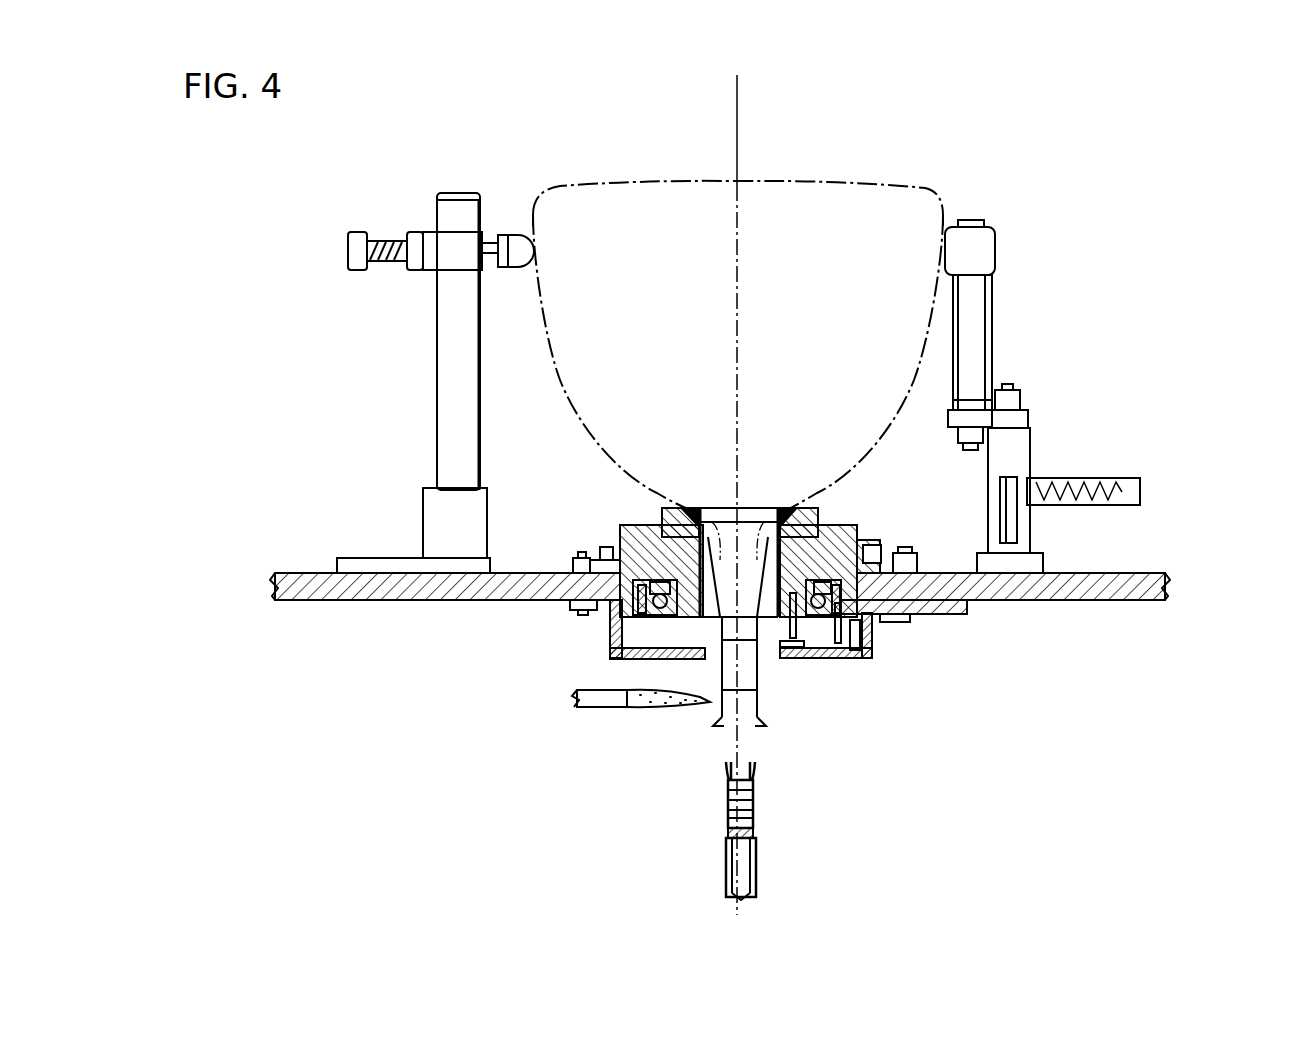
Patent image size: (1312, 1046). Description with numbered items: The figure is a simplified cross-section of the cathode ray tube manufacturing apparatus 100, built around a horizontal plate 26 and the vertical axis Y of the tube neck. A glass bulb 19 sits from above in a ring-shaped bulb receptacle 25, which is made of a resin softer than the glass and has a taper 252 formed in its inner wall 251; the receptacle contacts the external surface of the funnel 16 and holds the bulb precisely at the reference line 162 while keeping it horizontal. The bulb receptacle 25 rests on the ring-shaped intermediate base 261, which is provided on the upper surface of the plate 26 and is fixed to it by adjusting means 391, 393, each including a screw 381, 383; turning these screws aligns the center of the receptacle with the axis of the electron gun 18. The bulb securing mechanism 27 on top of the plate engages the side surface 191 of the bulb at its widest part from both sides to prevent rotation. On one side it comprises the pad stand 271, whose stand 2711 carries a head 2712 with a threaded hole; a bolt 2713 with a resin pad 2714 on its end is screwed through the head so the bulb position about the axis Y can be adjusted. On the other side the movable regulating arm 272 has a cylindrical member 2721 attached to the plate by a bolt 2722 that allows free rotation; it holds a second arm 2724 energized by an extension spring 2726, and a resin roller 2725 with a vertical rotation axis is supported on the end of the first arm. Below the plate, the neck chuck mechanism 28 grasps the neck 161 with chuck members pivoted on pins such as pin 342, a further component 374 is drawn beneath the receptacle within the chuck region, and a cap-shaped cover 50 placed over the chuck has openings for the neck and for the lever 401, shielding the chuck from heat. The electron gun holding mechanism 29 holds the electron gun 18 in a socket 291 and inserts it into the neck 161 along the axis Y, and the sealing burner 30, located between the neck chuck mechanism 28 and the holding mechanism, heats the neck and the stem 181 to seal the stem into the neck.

The cathode ray tube manufacturing apparatus 100 is at (561, 105).
The axis Y is at (740, 97).
The glass bulb 19 is at (888, 204).
The side surface 191 is at (533, 217).
The funnel 16 is at (627, 465).
The neck 161 is at (757, 690).
The reference line 162 is at (753, 508).
The electron gun 18 is at (728, 812).
The stem 181 is at (726, 834).
The electron gun holding mechanism 29 is at (749, 839).
The socket 291 is at (726, 874).
The bulb receptacle 25 is at (660, 513).
The inner wall 251 is at (718, 553).
The taper 252 is at (690, 508).
The plate 26 is at (1125, 580).
The intermediate base 261 is at (855, 540).
The bulb securing mechanism 27 is at (273, 441).
The pad stand 271 is at (417, 348).
The stand 2711 is at (437, 530).
The head 2712 is at (453, 263).
The bolt 2713 is at (378, 232).
The resin pad 2714 is at (528, 232).
The movable regulating arm 272 is at (1098, 396).
The cylindrical member 2721 is at (1015, 458).
The bolt 2722 is at (1006, 388).
The second arm 2724 is at (1140, 490).
The roller 2725 is at (985, 250).
The extension spring 2726 is at (1100, 497).
The neck chuck mechanism 28 is at (874, 666).
The sealing burner 30 is at (572, 702).
The pin 342 is at (793, 640).
The retainer 374 is at (840, 648).
The screw 381 is at (563, 563).
The screw 383 is at (960, 573).
The adjusting means 391 is at (590, 600).
The adjusting means 393 is at (895, 622).
The lever 401 is at (958, 616).
The cover 50 is at (610, 655).